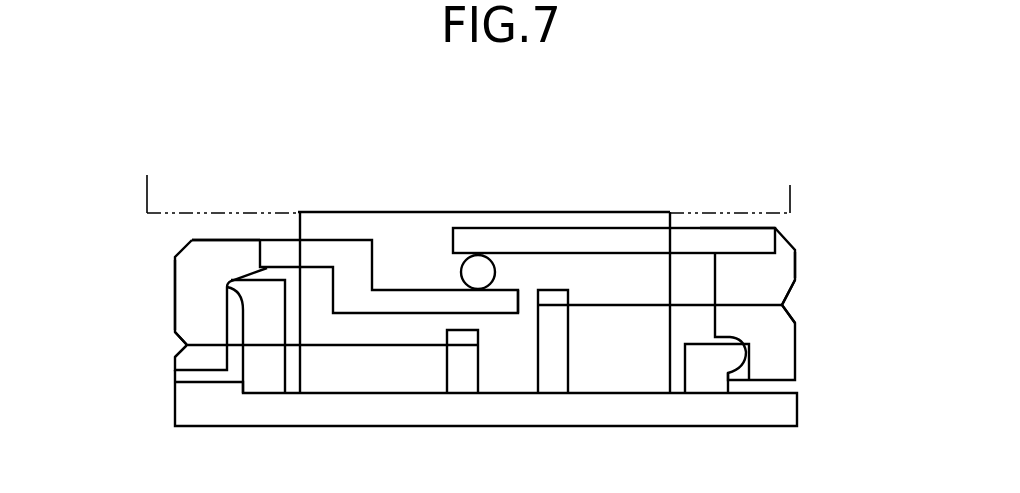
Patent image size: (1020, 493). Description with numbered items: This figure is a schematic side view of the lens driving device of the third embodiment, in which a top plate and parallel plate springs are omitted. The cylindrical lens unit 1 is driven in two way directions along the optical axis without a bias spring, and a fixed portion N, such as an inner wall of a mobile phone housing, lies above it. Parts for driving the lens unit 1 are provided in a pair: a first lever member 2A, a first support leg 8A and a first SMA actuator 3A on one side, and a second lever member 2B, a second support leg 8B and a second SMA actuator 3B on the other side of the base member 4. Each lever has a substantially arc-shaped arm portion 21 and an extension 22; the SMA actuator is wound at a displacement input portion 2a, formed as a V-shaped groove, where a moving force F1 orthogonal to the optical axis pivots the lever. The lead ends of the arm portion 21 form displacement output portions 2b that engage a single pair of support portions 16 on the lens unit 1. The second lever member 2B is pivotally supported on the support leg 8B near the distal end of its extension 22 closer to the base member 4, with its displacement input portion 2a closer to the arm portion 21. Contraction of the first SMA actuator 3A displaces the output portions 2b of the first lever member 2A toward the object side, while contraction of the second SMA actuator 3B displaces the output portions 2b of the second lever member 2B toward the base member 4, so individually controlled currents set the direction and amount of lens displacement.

The lens unit 1 is at (350, 232).
The fixed portion N is at (210, 218).
The first lever member 2A is at (85, 233).
The second lever member 2B is at (862, 183).
The arm portion 21 is at (278, 252).
The extension 22 is at (187, 312).
The displacement input portion 2a is at (173, 354).
The displacement output portions 2b is at (501, 256).
The support portions 16 is at (473, 265).
The first SMA actuator 3A is at (345, 350).
The second SMA actuator 3B is at (608, 308).
The first support leg 8A is at (258, 370).
The second support leg 8B is at (707, 378).
The base member 4 is at (780, 408).
The moving force F1 is at (126, 350).